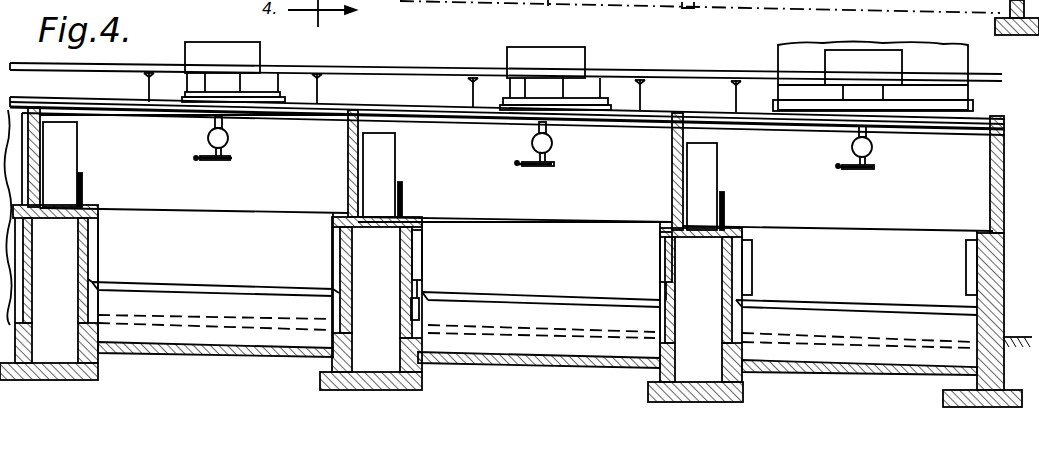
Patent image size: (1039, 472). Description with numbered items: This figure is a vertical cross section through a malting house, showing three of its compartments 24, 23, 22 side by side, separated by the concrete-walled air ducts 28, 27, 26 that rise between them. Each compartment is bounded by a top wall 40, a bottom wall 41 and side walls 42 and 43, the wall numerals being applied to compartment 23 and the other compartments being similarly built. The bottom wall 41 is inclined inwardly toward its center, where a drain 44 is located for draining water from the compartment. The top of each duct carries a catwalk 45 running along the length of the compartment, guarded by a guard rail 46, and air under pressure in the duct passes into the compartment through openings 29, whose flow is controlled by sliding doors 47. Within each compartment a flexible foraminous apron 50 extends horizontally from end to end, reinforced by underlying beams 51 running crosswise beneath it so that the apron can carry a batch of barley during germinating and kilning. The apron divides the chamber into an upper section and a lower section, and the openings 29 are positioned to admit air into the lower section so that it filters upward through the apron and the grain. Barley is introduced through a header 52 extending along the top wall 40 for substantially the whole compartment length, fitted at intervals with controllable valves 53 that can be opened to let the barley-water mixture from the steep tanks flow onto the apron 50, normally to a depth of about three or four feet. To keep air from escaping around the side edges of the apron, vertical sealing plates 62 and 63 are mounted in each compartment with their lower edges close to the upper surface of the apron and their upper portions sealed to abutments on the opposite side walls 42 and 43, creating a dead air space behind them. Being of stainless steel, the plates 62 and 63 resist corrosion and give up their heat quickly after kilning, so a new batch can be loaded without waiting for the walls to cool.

The compartment 22 is at (967, 158).
The compartment 23 is at (650, 154).
The compartment 24 is at (293, 149).
The duct 26 is at (711, 294).
The duct 27 is at (391, 276).
The duct 28 is at (68, 285).
The openings 29 is at (92, 306).
The top wall 40 is at (125, 115).
The bottom wall 41 is at (488, 358).
The side wall 42 is at (420, 237).
The side wall 43 is at (660, 247).
The drain 44 is at (562, 21).
The catwalk 45 is at (70, 189).
The guard rail 46 is at (82, 192).
The sliding doors 47 is at (460, 323).
The flexible foraminous apron 50 is at (520, 282).
The underlying beams 51 is at (603, 334).
The header 52 is at (225, 134).
The controllable valves 53 is at (194, 158).
The sealing plate 62 is at (420, 266).
The sealing plate 63 is at (660, 269).